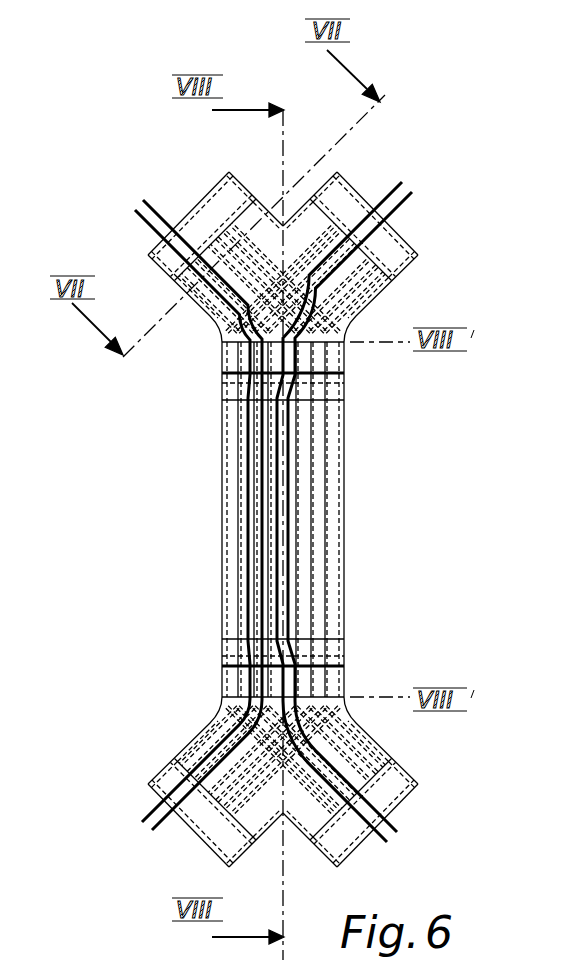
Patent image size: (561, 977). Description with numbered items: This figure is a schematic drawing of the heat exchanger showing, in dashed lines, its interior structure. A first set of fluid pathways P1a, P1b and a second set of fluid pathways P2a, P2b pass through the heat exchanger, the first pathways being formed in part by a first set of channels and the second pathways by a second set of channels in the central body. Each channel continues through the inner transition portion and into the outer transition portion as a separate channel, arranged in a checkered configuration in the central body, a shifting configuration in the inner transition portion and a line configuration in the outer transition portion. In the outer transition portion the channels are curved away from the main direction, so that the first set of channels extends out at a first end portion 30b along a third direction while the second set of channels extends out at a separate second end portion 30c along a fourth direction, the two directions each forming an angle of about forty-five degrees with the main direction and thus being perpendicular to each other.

The first fluid pathway P1a is at (402, 180).
The first fluid pathway P1b is at (414, 193).
The second fluid pathway P2a is at (144, 198).
The second fluid pathway P2b is at (134, 210).
The first end portion 30b is at (348, 288).
The second end portion 30c is at (210, 747).